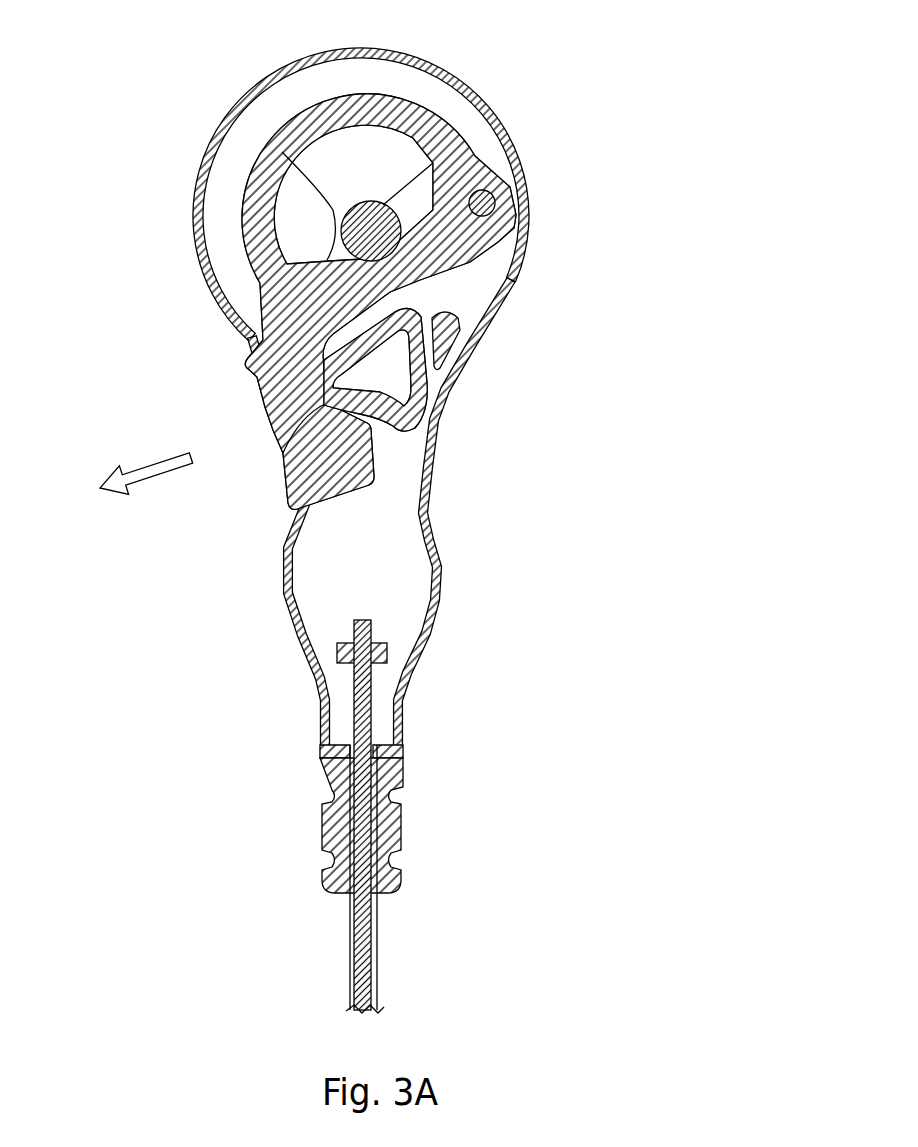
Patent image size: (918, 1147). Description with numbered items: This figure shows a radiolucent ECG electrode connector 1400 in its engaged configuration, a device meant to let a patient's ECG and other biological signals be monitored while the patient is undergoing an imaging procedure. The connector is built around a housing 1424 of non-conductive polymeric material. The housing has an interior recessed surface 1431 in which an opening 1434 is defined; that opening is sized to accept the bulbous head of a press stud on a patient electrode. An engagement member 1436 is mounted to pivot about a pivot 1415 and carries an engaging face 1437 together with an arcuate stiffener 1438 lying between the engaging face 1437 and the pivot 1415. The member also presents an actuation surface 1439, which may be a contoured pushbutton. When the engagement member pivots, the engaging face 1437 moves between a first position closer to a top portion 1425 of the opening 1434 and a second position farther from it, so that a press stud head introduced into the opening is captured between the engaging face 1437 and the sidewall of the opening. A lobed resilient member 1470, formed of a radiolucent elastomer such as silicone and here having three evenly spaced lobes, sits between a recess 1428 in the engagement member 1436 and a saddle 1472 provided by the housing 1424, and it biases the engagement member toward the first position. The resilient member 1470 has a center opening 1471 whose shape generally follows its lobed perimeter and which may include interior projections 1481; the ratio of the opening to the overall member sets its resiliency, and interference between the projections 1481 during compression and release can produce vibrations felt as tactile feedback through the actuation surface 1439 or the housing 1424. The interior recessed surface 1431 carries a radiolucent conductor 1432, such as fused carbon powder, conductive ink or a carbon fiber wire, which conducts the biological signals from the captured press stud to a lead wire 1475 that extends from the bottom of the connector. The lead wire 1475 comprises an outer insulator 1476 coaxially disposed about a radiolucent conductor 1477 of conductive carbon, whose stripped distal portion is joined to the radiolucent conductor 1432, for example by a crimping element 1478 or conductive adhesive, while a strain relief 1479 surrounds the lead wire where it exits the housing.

The ECG electrode connector 1400 is at (573, 54).
The pivot 1415 is at (496, 208).
The housing 1424 is at (455, 67).
The top portion of opening 1425 is at (395, 170).
The recess 1428 is at (287, 458).
The interior recessed surface 1431 is at (270, 110).
The radiolucent conductor 1432 is at (227, 221).
The opening 1434 is at (282, 152).
The engagement member 1436 is at (247, 377).
The engaging face 1437 is at (360, 238).
The stiffener 1438 is at (348, 100).
The actuation surface 1439 is at (268, 415).
The lobed resilient member 1470 is at (432, 443).
The center opening 1471 is at (425, 410).
The saddle 1472 is at (455, 335).
The lead wire 1475 is at (344, 938).
The outer insulator 1476 is at (377, 918).
The conductor 1477 is at (370, 703).
The crimping element 1478 is at (387, 653).
The strain relief 1479 is at (400, 780).
The interior projections 1481 is at (400, 392).